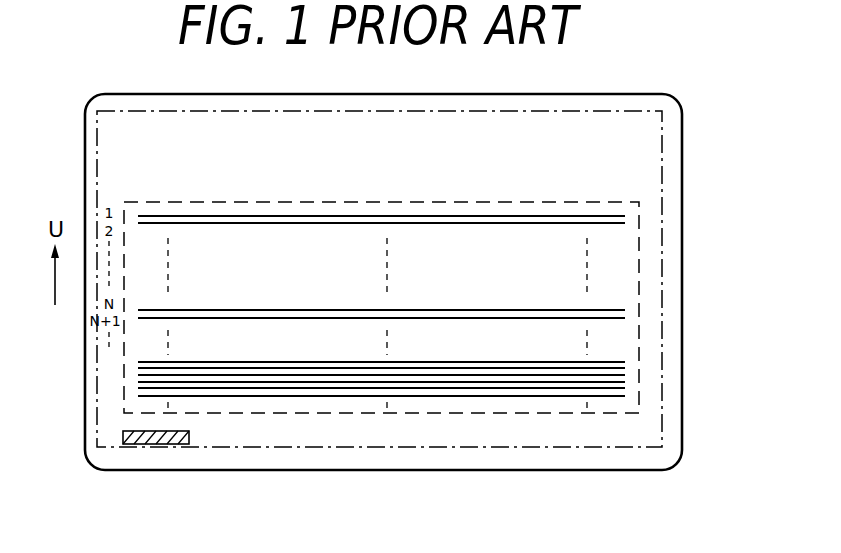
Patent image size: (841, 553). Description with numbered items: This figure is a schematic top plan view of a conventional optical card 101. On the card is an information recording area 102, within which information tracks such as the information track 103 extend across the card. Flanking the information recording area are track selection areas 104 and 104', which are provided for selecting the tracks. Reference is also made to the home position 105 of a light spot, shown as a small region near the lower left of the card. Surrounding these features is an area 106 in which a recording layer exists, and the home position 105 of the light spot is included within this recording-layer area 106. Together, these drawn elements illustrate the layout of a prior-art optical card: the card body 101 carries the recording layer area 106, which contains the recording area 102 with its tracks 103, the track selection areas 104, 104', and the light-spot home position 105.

The optical card 101 is at (683, 207).
The information recording area 102 is at (325, 238).
The information track 103 is at (615, 311).
The track selection area 104 is at (327, 371).
The track selection area 104' is at (438, 307).
The home position of a light spot 105 is at (123, 435).
The area in which a recording layer exists 106 is at (584, 112).